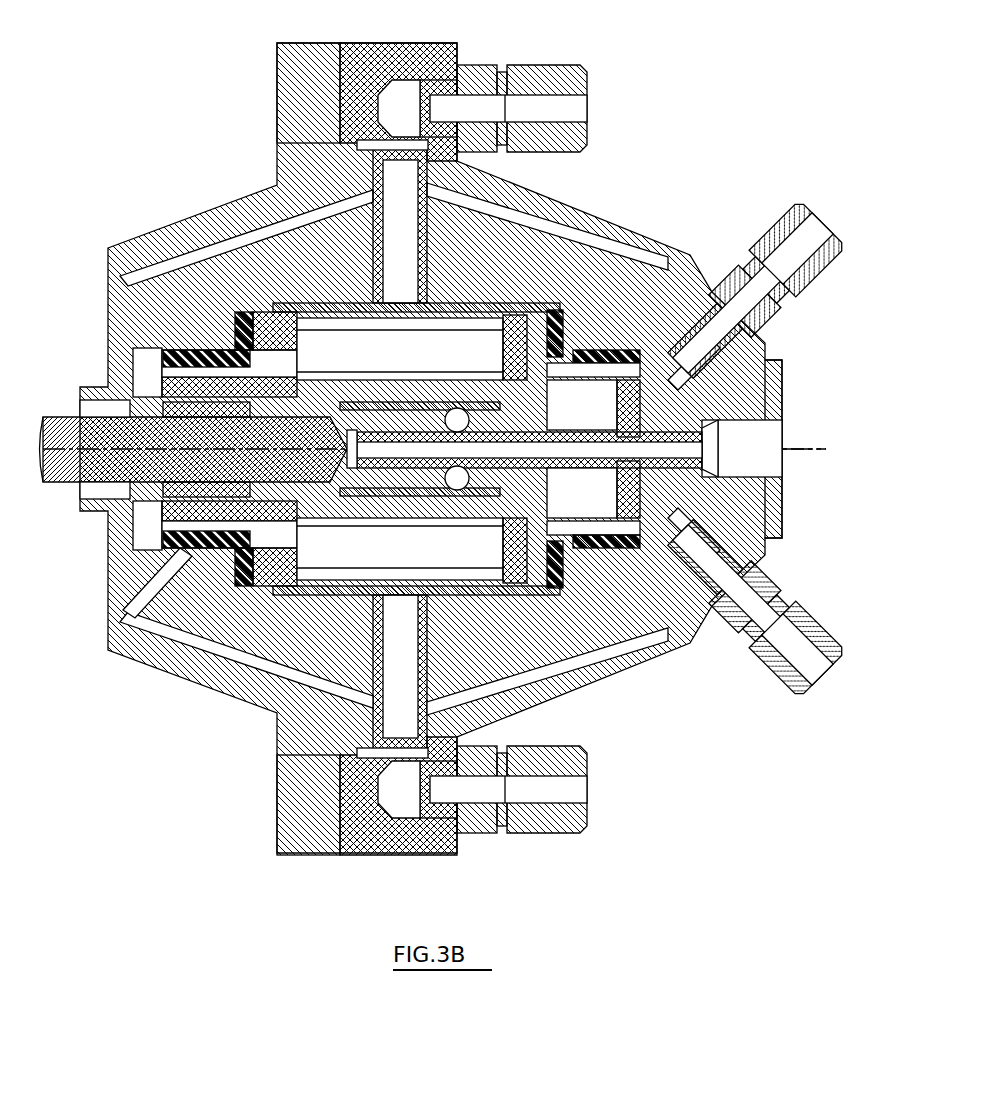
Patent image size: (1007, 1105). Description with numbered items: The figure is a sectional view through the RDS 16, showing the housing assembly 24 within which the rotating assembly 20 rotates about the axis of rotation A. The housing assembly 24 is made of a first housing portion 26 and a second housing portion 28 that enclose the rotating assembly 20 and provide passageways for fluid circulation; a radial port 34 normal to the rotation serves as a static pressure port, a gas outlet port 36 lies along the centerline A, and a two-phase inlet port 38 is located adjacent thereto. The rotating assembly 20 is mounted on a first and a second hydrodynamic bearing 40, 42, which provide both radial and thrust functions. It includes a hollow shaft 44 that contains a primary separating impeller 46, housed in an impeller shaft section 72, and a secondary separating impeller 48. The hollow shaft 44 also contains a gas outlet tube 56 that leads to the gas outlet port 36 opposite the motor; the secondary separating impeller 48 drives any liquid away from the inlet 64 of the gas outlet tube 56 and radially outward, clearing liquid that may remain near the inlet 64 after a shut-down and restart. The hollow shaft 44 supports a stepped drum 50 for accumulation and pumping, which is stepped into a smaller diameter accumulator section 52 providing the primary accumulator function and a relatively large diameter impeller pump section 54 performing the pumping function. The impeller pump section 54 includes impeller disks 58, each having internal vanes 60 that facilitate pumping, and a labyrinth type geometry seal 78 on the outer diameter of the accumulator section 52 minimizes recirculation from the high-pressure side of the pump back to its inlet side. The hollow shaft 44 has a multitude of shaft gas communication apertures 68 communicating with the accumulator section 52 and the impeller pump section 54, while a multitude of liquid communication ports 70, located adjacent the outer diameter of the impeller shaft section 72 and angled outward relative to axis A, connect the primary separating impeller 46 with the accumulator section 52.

The RDS 16 is at (172, 178).
The rotating assembly 20 is at (64, 485).
The housing assembly 24 is at (277, 58).
The first housing portion 26 is at (395, 56).
The second housing portion 28 is at (318, 56).
The radial port 34 is at (538, 78).
The gas outlet port 36 is at (782, 446).
The two-phase inlet port 38 is at (812, 298).
The first hydrodynamic bearing 40 is at (232, 336).
The second hydrodynamic bearing 42 is at (585, 336).
The hollow shaft 44 is at (247, 445).
The primary separating impeller 46 is at (598, 423).
The secondary separating impeller 48 is at (368, 490).
The stepped drum 50 is at (470, 298).
The accumulator section 52 is at (452, 368).
The impeller pump section 54 is at (405, 252).
The gas outlet tube 56 is at (815, 449).
The impeller disks 58 is at (362, 672).
The internal vanes 60 is at (416, 640).
The inlet 64 is at (340, 472).
The shaft gas communication apertures 68 is at (470, 424).
The liquid communication ports 70 is at (525, 373).
The impeller shaft section 72 is at (558, 580).
The labyrinth type geometry seal 78 is at (513, 604).
The axis of rotation A is at (812, 452).